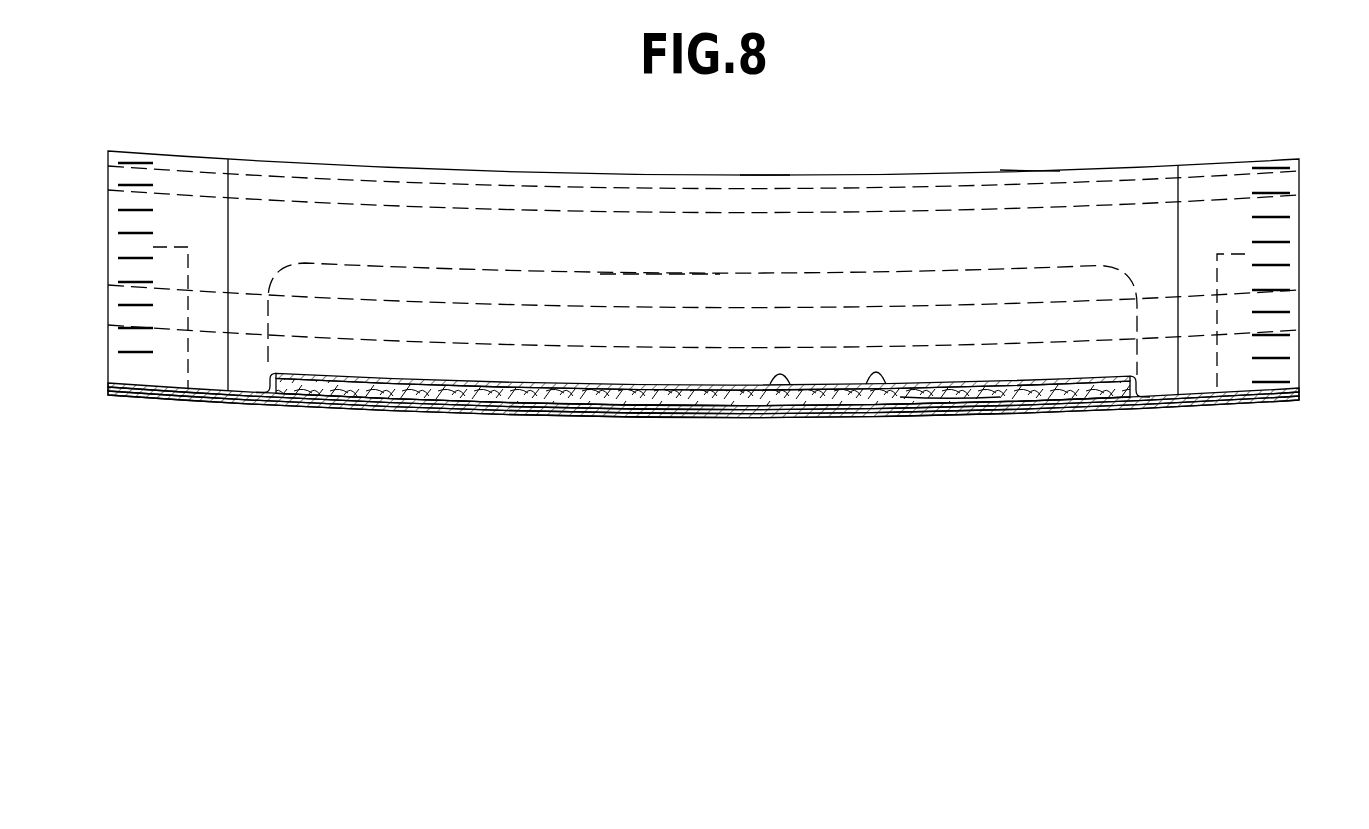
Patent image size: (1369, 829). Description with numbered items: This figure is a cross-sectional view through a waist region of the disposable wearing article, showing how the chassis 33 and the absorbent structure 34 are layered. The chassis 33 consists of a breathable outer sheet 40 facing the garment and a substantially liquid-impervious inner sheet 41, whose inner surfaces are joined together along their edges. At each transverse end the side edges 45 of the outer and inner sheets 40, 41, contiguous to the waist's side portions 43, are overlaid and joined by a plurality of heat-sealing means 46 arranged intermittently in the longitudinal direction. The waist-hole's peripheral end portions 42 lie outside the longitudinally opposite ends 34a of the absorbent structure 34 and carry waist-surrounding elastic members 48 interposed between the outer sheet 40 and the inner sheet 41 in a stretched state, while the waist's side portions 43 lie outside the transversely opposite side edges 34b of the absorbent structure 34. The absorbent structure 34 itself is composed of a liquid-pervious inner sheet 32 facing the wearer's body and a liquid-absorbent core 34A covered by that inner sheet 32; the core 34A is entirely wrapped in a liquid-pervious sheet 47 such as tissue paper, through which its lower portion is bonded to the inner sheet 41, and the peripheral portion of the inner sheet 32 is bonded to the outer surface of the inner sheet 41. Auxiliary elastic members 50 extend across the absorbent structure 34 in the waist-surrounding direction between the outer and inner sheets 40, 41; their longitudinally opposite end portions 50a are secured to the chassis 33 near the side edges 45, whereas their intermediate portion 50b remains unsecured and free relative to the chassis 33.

The liquid-pervious inner sheet 32 is at (883, 378).
The chassis 33 is at (1253, 160).
The absorbent structure 34 is at (775, 385).
The longitudinally opposite ends 34a is at (762, 273).
The liquid-absorbent core 34A is at (947, 397).
The transversely opposite side edges 34b is at (271, 400).
The outer sheet 40 is at (1197, 410).
The inner sheet 41 is at (1043, 405).
The waist-hole's peripheral end portions 42 is at (862, 232).
The waist's side portions 43 is at (142, 225).
The side edges 45 is at (108, 220).
The heat-sealing means 46 is at (138, 183).
The liquid-pervious sheet 47 is at (980, 395).
The waist-surrounding elastic members 48 is at (1041, 208).
The auxiliary elastic members 50 is at (926, 348).
The longitudinally opposite end portions 50a is at (150, 327).
The intermediate portion 50b is at (670, 348).